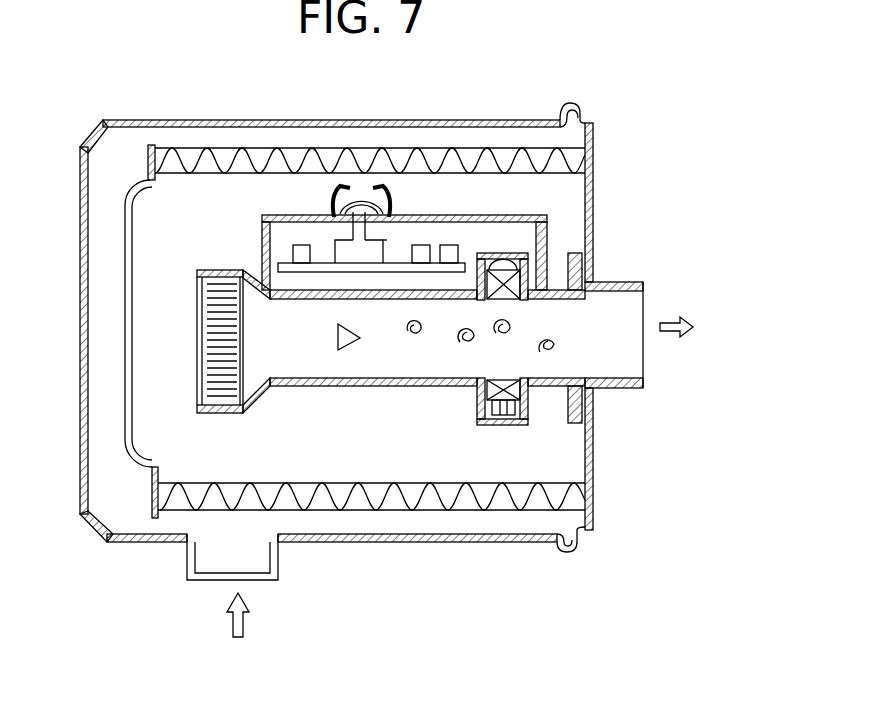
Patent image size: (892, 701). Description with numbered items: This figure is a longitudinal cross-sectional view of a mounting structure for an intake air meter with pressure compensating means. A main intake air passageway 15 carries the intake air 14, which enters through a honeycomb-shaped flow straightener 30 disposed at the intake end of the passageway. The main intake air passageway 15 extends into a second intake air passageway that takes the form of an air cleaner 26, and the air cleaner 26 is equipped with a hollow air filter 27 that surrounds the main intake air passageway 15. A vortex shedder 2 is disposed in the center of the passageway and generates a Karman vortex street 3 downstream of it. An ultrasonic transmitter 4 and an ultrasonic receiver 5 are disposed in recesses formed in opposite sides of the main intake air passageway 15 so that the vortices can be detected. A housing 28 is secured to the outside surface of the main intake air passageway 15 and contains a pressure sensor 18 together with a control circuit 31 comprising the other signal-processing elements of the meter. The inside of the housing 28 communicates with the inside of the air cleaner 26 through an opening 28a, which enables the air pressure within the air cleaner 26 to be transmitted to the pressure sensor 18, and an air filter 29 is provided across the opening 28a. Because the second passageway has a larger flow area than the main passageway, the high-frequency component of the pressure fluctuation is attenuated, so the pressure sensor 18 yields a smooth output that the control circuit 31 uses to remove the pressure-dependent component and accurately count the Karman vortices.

The vortex shedder 2 is at (353, 350).
The Karman vortex street 3 is at (463, 344).
The ultrasonic transmitter 4 is at (503, 275).
The ultrasonic receiver 5 is at (502, 427).
The intake air 14 is at (252, 622).
The main intake air passageway 15 is at (261, 404).
The pressure sensor 18 is at (330, 248).
The air cleaner 26 is at (361, 341).
The hollow air filter 27 is at (385, 510).
The housing 28 is at (530, 213).
The opening 28a is at (358, 190).
The air filter 29 is at (385, 193).
The honeycomb-shaped flow straightener 30 is at (197, 333).
The control circuit 31 is at (283, 257).